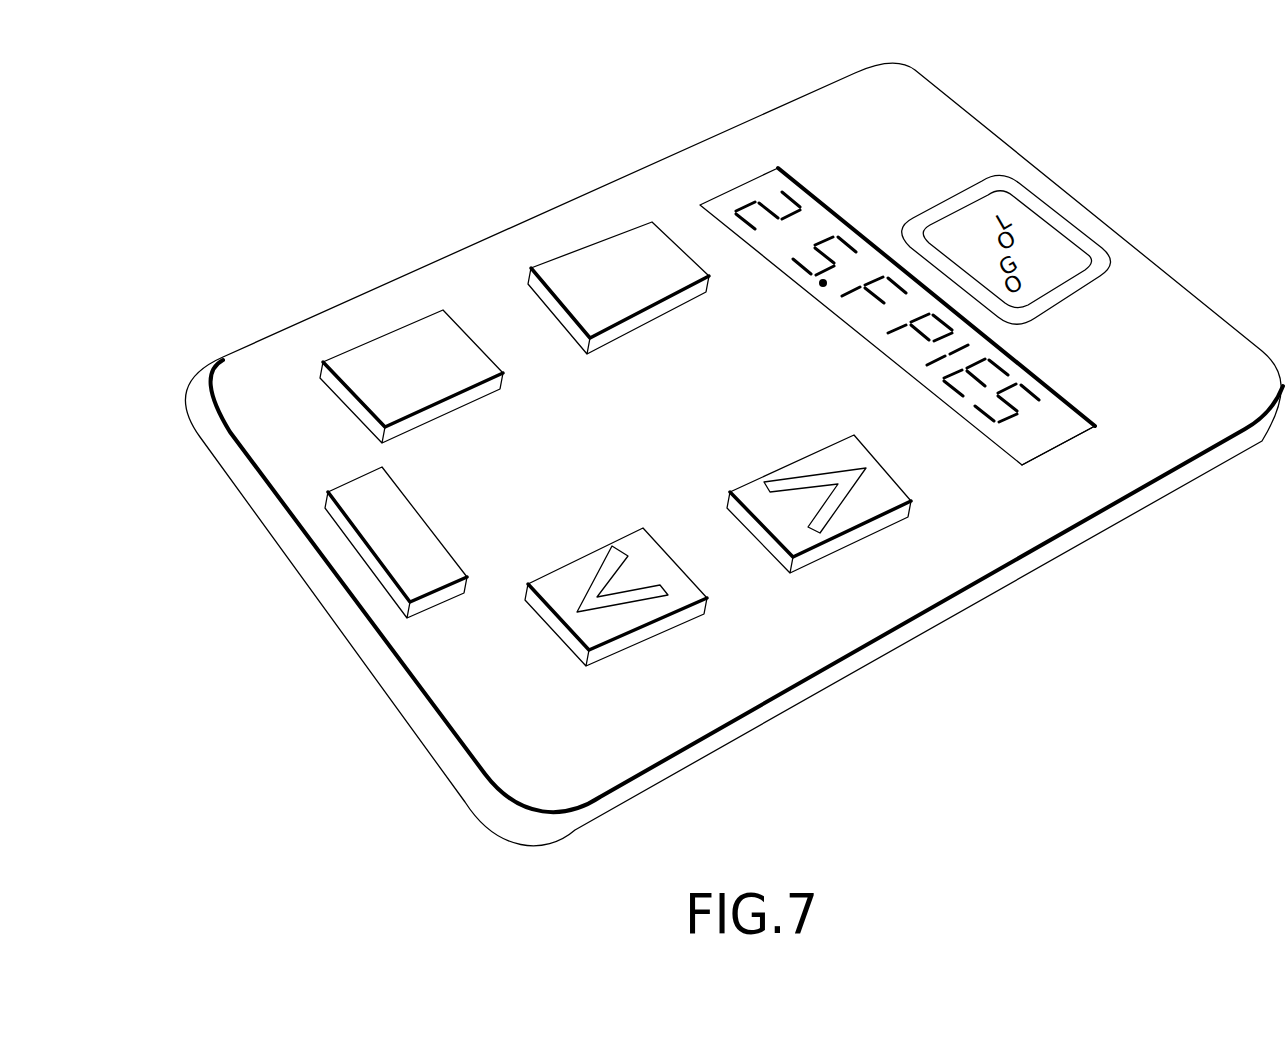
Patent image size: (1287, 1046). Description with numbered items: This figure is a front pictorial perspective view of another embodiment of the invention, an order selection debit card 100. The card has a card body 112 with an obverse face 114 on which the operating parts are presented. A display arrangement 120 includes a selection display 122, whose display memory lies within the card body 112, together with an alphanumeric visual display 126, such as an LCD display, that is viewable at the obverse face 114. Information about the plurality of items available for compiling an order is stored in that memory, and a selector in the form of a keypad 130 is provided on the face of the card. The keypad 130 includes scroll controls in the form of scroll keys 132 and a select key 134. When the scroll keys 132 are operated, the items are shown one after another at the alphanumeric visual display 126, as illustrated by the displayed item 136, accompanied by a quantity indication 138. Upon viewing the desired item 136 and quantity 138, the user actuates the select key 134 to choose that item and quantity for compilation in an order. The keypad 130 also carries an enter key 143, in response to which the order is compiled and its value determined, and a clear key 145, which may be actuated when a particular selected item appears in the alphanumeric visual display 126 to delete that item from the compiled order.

The order selection debit card 100 is at (734, 454).
The card body 112 is at (410, 698).
The obverse face 114 is at (1187, 371).
The display arrangement 120 is at (920, 373).
The selection display 122 is at (923, 467).
The alphanumeric visual display 126 is at (1043, 428).
The keypad 130 is at (721, 584).
The scroll keys 132 is at (664, 543).
The select key 134 is at (648, 291).
The item 136 is at (887, 322).
The quantity indication 138 is at (795, 205).
The enter key 143 is at (467, 358).
The clear key 145 is at (377, 490).